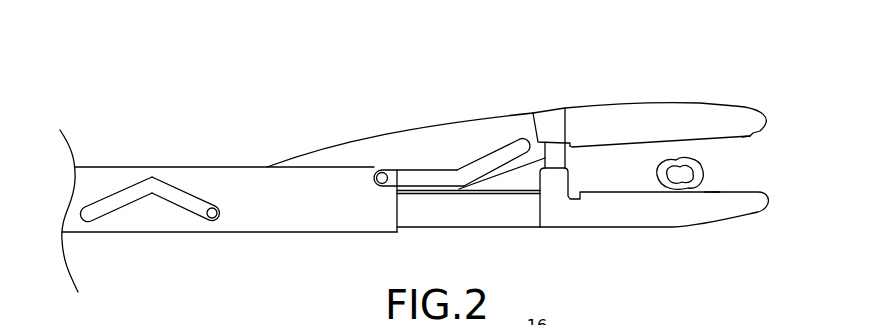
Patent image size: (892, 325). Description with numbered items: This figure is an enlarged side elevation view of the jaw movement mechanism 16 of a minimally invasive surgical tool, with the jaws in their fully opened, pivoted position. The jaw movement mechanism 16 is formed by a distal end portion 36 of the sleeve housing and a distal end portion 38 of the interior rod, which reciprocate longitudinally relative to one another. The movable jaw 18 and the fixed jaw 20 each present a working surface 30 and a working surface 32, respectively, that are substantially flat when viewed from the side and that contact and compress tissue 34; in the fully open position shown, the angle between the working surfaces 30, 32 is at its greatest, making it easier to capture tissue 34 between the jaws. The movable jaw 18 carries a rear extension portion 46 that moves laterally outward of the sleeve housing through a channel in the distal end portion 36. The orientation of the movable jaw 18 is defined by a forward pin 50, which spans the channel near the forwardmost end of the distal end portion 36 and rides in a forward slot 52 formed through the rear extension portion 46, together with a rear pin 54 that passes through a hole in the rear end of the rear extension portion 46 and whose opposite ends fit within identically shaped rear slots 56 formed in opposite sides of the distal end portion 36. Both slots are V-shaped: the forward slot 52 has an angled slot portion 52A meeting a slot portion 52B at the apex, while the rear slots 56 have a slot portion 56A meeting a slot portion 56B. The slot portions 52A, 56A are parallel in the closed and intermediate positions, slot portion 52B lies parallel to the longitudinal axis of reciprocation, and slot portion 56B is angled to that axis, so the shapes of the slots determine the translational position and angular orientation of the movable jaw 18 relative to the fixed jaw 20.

The jaw movement mechanism 16 is at (478, 54).
The movable jaw 18 is at (650, 103).
The fixed jaw 20 is at (667, 228).
The working surface 30 is at (742, 137).
The working surface 32 is at (712, 190).
The tissue 34 is at (657, 175).
The distal end portion of the sleeve housing 36 is at (90, 233).
The distal end portion of the interior rod 38 is at (505, 227).
The rear extension portion 46 is at (403, 131).
The forward pin 50 is at (376, 171).
The forward slot 52 is at (452, 175).
The slot portion 52A is at (491, 151).
The slot portion 52B is at (437, 188).
The rear pin 54 is at (210, 207).
The rear slots 56 is at (151, 194).
The slot portion 56A is at (147, 196).
The slot portion 56B is at (193, 213).